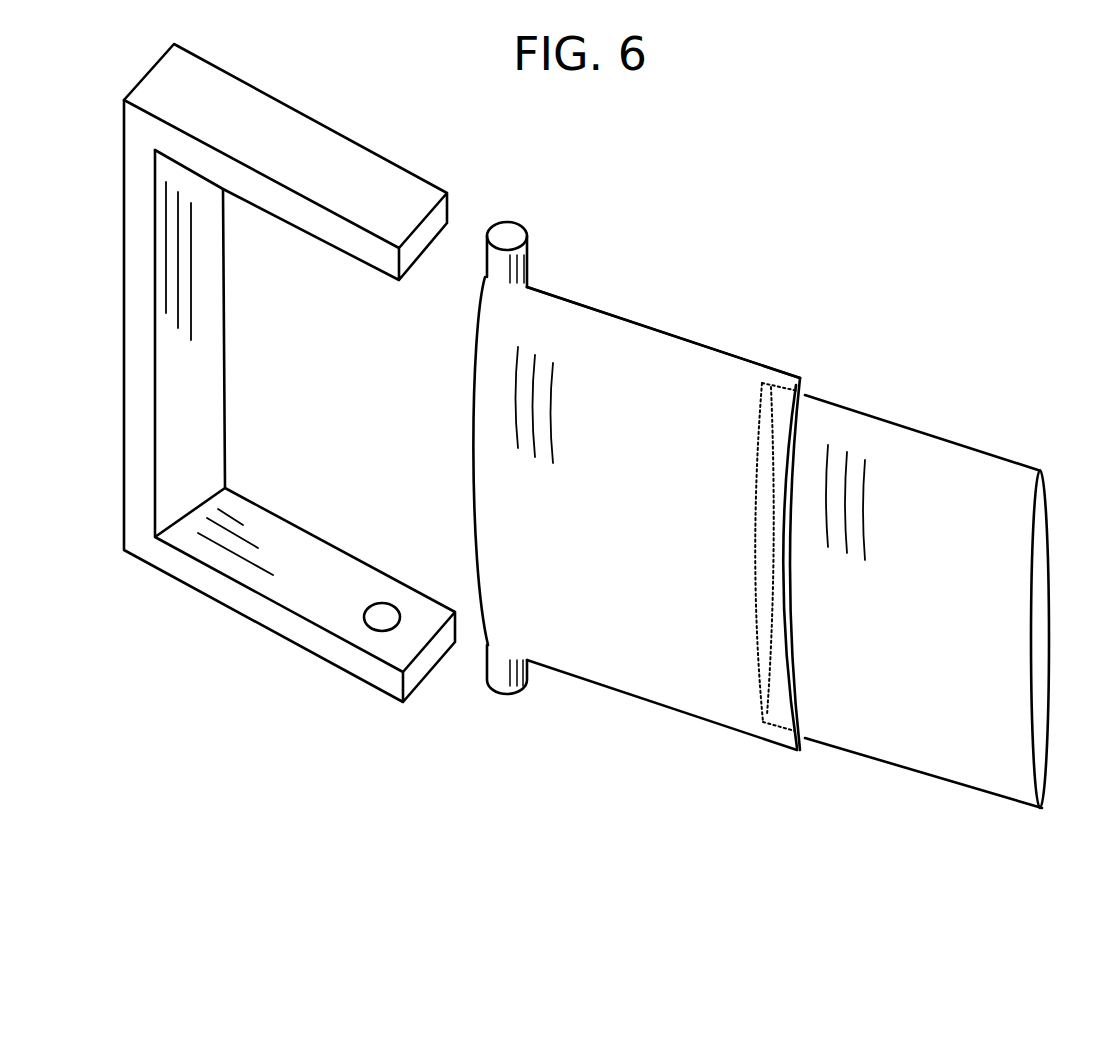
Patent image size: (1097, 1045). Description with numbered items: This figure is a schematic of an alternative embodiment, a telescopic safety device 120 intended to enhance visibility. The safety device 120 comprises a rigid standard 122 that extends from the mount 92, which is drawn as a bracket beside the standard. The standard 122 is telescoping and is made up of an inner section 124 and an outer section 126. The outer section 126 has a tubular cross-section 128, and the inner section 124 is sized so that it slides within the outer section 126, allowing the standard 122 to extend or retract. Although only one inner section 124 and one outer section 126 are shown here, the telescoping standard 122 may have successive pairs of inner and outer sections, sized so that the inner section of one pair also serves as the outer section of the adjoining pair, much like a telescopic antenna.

The mount 92 is at (323, 140).
The telescopic safety device 120 is at (289, 426).
The rigid standard 122 is at (745, 357).
The inner section 124 is at (945, 440).
The outer section 126 is at (645, 323).
The tubular cross-section 128 is at (805, 393).